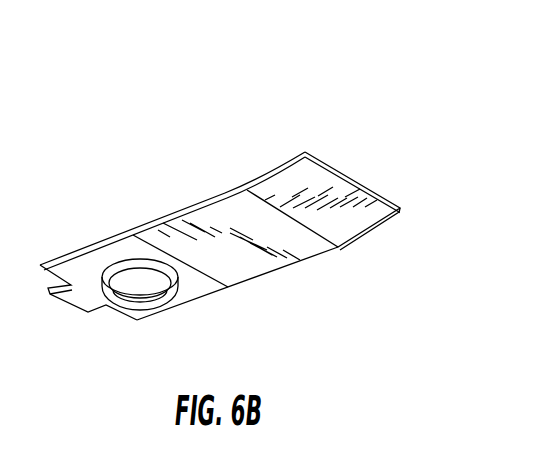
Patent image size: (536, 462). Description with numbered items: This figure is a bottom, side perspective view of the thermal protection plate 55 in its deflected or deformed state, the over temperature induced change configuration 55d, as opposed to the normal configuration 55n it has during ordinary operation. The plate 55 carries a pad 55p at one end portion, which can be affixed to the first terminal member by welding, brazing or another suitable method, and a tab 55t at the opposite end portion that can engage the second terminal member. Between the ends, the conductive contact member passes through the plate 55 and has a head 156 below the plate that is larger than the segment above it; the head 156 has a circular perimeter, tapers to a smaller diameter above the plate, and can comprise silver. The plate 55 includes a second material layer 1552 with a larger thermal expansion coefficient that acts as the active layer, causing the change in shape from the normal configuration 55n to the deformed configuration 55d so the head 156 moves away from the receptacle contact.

The thermal protection plate 55 is at (211, 233).
The normal configuration 55n is at (195, 158).
The pad 55p is at (322, 183).
The over temperature induced change configuration 55d is at (246, 294).
The tab 55t is at (77, 295).
The head 156 is at (152, 300).
The second material layer 1552 is at (277, 252).